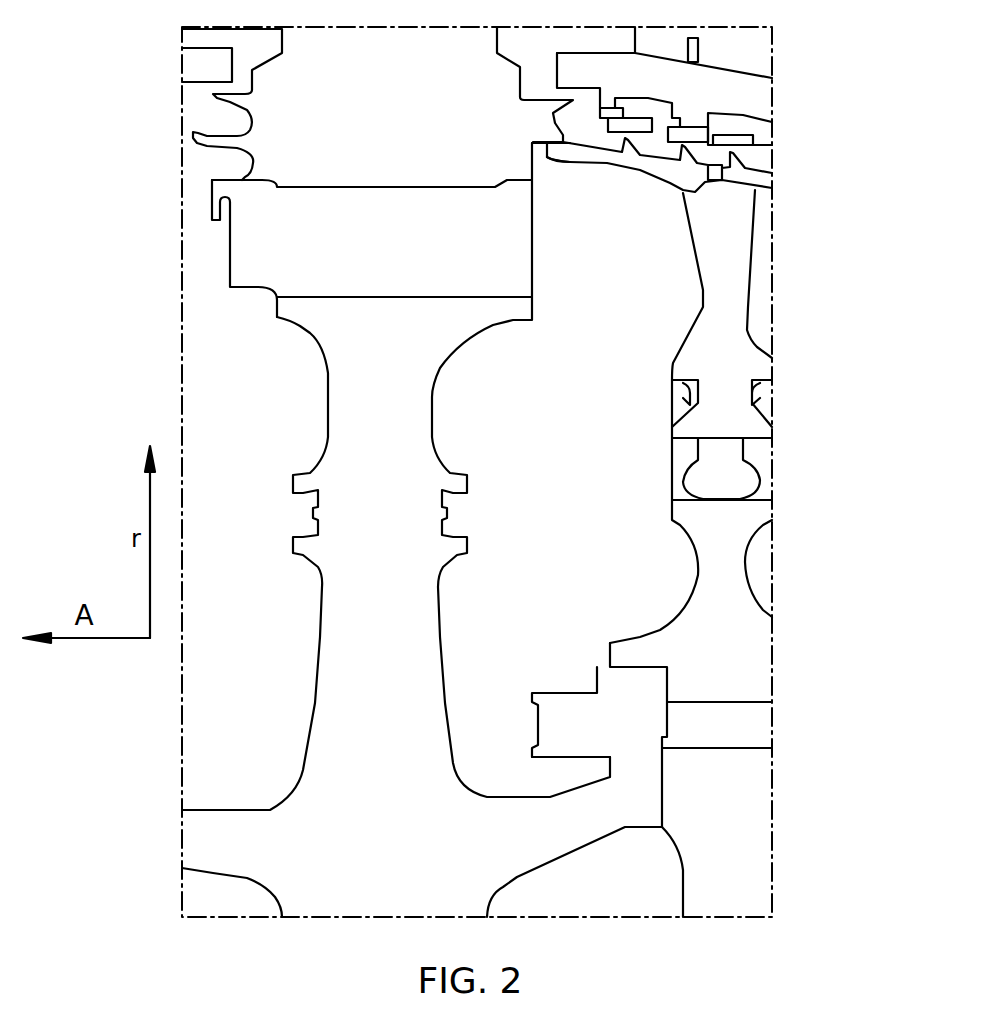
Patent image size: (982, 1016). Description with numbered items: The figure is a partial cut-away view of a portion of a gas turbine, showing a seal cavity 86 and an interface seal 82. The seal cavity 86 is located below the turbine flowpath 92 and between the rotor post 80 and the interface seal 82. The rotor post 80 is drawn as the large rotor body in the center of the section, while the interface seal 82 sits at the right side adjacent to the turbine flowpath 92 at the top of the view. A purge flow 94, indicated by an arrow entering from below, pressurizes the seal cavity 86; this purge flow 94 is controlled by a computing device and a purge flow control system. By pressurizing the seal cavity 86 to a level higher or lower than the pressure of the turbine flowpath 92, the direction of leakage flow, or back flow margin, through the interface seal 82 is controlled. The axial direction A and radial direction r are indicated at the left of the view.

The rotor post 80 is at (394, 833).
The interface seal 82 is at (803, 224).
The seal cavity 86 is at (530, 556).
The turbine flowpath 92 is at (546, 57).
The purge flow 94 is at (612, 851).